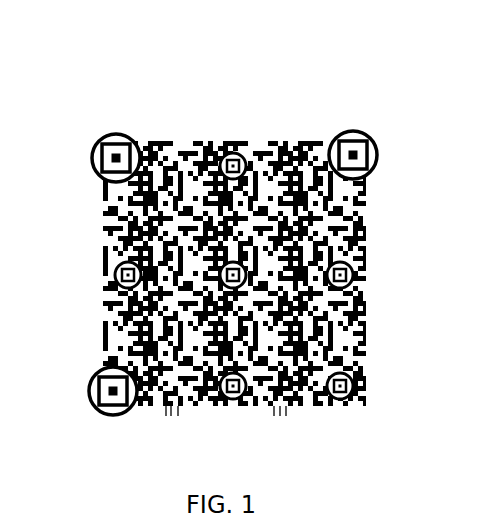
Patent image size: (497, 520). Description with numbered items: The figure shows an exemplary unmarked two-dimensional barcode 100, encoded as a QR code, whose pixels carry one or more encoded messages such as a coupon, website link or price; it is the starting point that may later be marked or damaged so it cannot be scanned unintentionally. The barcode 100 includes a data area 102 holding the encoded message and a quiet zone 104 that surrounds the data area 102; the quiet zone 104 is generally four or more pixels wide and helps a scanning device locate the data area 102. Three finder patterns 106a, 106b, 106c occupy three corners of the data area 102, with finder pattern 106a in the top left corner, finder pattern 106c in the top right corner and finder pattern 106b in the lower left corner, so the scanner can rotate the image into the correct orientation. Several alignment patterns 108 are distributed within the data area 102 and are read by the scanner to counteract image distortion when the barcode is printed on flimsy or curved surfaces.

The unmarked two-dimensional barcode 100 is at (246, 240).
The data area 102 is at (276, 258).
The quiet zone 104 is at (378, 223).
The finder pattern 106a is at (85, 149).
The finder pattern 106b is at (80, 383).
The finder pattern 106c is at (370, 148).
The alignment pattern 108 is at (350, 268).